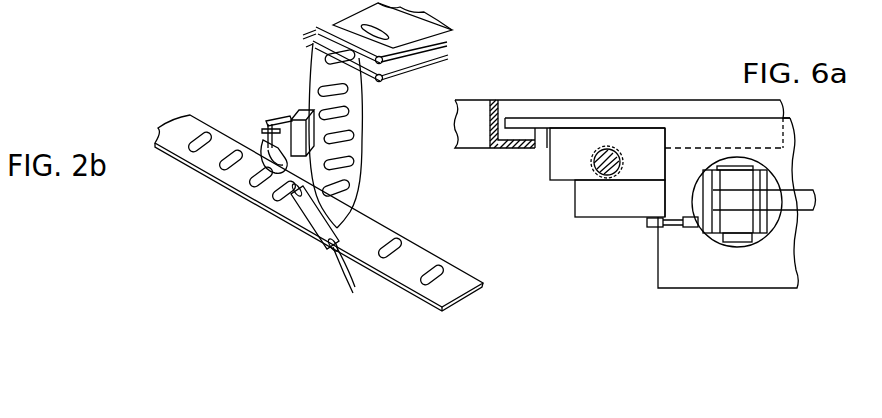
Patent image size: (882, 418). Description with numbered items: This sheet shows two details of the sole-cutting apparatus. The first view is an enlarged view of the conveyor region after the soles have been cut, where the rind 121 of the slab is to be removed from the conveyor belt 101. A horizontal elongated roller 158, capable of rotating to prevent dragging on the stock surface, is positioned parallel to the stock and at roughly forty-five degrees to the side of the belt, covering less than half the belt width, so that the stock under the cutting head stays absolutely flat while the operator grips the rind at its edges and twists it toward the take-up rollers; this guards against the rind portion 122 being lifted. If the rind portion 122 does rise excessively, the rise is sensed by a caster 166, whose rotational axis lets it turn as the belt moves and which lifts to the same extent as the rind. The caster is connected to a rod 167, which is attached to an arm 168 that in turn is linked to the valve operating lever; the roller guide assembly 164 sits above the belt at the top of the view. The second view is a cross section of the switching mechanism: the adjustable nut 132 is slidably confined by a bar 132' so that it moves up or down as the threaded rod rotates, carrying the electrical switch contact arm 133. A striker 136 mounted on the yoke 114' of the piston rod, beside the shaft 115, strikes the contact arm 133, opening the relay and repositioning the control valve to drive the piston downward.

In FIG. 2B, the conveyor belt 101 is at (293, 225).
In FIG. 2B, the rind portion 122 is at (238, 186).
In FIG. 2B, the rind 121 is at (361, 112).
In FIG. 2B, the roller guide assembly 164 is at (306, 41).
In FIG. 2B, the elongated roller 158 is at (340, 230).
In FIG. 2B, the arm 168 is at (284, 118).
In FIG. 2B, the rod 167 is at (278, 118).
In FIG. 2B, the caster 166 is at (272, 123).
In FIG. 6A, the bar 132' is at (622, 128).
In FIG. 6A, the adjustable nut 132 is at (620, 219).
In FIG. 6A, the contact arm 133 is at (647, 227).
In FIG. 6A, the striker 136 is at (670, 227).
In FIG. 6A, the yoke 114' is at (771, 204).
In FIG. 6A, the output shaft 115 is at (805, 193).